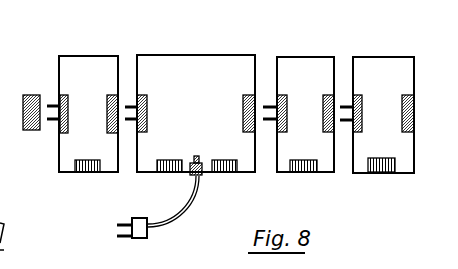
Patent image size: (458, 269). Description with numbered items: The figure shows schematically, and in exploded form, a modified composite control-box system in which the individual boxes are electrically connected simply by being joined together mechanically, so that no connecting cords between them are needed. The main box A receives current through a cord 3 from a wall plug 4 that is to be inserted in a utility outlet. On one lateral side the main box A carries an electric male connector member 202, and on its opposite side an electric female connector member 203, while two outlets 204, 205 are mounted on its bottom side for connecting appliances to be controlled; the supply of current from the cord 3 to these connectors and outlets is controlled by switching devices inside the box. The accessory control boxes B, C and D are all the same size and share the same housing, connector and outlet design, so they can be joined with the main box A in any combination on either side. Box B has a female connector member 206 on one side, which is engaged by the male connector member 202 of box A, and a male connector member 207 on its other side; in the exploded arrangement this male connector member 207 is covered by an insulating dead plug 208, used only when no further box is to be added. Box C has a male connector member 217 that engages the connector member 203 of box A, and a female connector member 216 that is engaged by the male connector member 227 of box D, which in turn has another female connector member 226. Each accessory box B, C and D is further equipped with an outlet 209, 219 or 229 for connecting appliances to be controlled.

The main box A is at (184, 56).
The accessory control box B is at (89, 57).
The accessory control box C is at (305, 58).
The accessory control box D is at (381, 60).
The cord 3 is at (183, 207).
The wall plug 4 is at (138, 218).
The electric male connector member 202 is at (146, 100).
The electric female connector member 203 is at (226, 113).
The outlet 204 is at (170, 160).
The outlet 205 is at (227, 151).
The right contact block of unit B 206 is at (107, 96).
The male connector member 207 is at (68, 122).
The insulating dead plug 208 is at (34, 95).
The outlet 209 is at (85, 173).
The female connector member 216 is at (331, 127).
The male connector member 217 is at (292, 92).
The outlet 219 is at (303, 173).
The female connector member 226 is at (402, 124).
The male connector member 227 is at (359, 99).
The outlet 229 is at (384, 181).